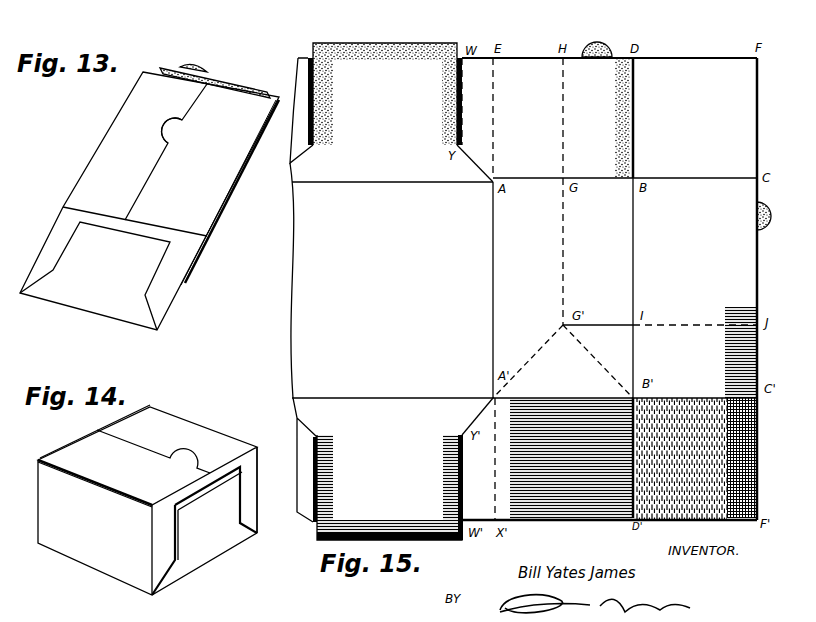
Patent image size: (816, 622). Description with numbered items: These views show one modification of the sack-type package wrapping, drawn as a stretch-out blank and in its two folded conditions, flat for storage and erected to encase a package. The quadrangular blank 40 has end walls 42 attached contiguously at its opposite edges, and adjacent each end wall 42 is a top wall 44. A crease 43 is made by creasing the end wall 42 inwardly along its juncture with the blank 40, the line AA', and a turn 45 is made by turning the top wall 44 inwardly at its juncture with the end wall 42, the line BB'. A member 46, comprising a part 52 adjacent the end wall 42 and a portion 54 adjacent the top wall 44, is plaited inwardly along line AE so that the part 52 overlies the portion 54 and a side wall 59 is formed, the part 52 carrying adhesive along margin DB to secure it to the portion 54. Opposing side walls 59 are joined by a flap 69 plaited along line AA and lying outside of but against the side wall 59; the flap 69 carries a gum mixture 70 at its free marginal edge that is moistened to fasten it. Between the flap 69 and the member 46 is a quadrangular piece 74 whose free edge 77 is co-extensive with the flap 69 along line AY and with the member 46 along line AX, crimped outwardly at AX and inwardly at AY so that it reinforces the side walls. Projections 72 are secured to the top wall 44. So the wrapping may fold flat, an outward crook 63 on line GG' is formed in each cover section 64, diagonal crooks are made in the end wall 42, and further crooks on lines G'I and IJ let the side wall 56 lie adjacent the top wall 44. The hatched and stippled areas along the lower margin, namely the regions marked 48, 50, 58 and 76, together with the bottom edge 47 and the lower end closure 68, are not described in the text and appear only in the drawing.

In FIG. 15, the quadrangular blank 40 is at (391, 290).
In FIG. 14, the end wall 42 is at (147, 501).
In FIG. 15, the end wall 42 is at (563, 288).
In FIG. 14, the crease 43 is at (95, 484).
In FIG. 15, the crease 43 is at (495, 330).
In FIG. 13, the top wall 44 is at (149, 201).
In FIG. 14, the top wall 44 is at (153, 452).
In FIG. 15, the top wall 44 is at (695, 288).
In FIG. 15, the turn 45 is at (633, 358).
In FIG. 15, the member 46 is at (657, 30).
In FIG. 15, the bottom edge of blank 47 is at (707, 533).
In FIG. 15, the glue flap 48 is at (517, 497).
In FIG. 15, the glue flap 50 is at (696, 459).
In FIG. 15, the part 52 is at (519, 118).
In FIG. 15, the portion 54 is at (686, 118).
In FIG. 13, the side wall 56 is at (177, 262).
In FIG. 14, the side wall 56 is at (66, 445).
In FIG. 15, the adhesive area 58 is at (562, 410).
In FIG. 14, the side wall 59 is at (250, 495).
In FIG. 15, the outward crook 63 is at (565, 259).
In FIG. 15, the cover section 64 is at (773, 349).
In FIG. 13, the end closure flap 68 is at (95, 276).
In FIG. 15, the end closure flap 68 is at (403, 469).
In FIG. 13, the flap 69 is at (195, 68).
In FIG. 14, the flap 69 is at (204, 531).
In FIG. 15, the flap 69 is at (400, 112).
In FIG. 13, the gum mixture 70 is at (230, 76).
In FIG. 15, the gum mixture 70 is at (377, 53).
In FIG. 13, the projection 72 is at (262, 82).
In FIG. 15, the projection 72 is at (763, 210).
In FIG. 15, the quadrangular piece 74 is at (478, 289).
In FIG. 15, the connecting strip 76 is at (462, 498).
In FIG. 15, the free edge 77 is at (466, 76).